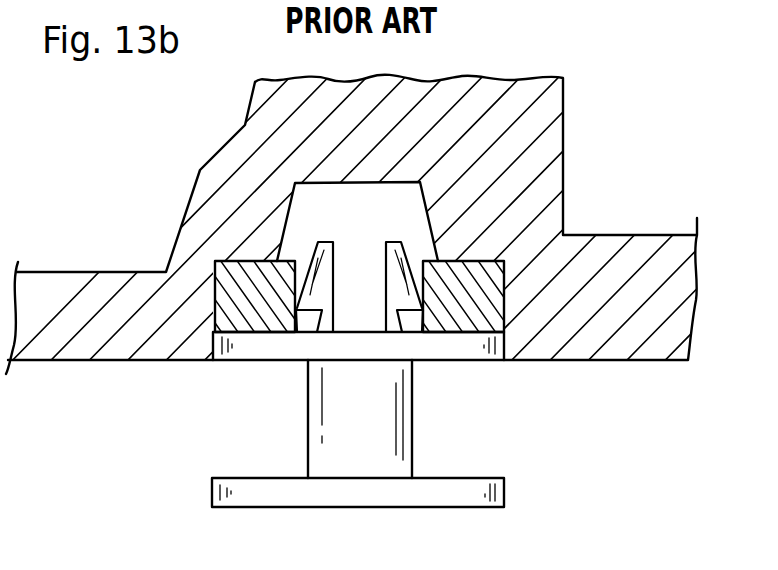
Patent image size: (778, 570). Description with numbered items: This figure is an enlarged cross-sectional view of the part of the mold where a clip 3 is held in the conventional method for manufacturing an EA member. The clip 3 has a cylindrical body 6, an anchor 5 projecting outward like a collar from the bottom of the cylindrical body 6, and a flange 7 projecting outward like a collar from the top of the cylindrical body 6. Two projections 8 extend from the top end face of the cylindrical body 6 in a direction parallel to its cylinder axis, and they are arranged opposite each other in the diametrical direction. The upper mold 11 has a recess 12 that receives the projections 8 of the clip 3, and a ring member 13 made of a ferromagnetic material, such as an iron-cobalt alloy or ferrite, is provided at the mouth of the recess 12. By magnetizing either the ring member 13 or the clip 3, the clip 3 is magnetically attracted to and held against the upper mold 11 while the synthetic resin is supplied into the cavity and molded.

The clip 3 is at (383, 380).
The anchor 5 is at (479, 507).
The cylindrical body 6 is at (315, 439).
The flange 7 is at (473, 358).
The projections 8 is at (326, 242).
The upper mold 11 is at (642, 243).
The recess 12 is at (305, 205).
The ring member 13 is at (233, 267).